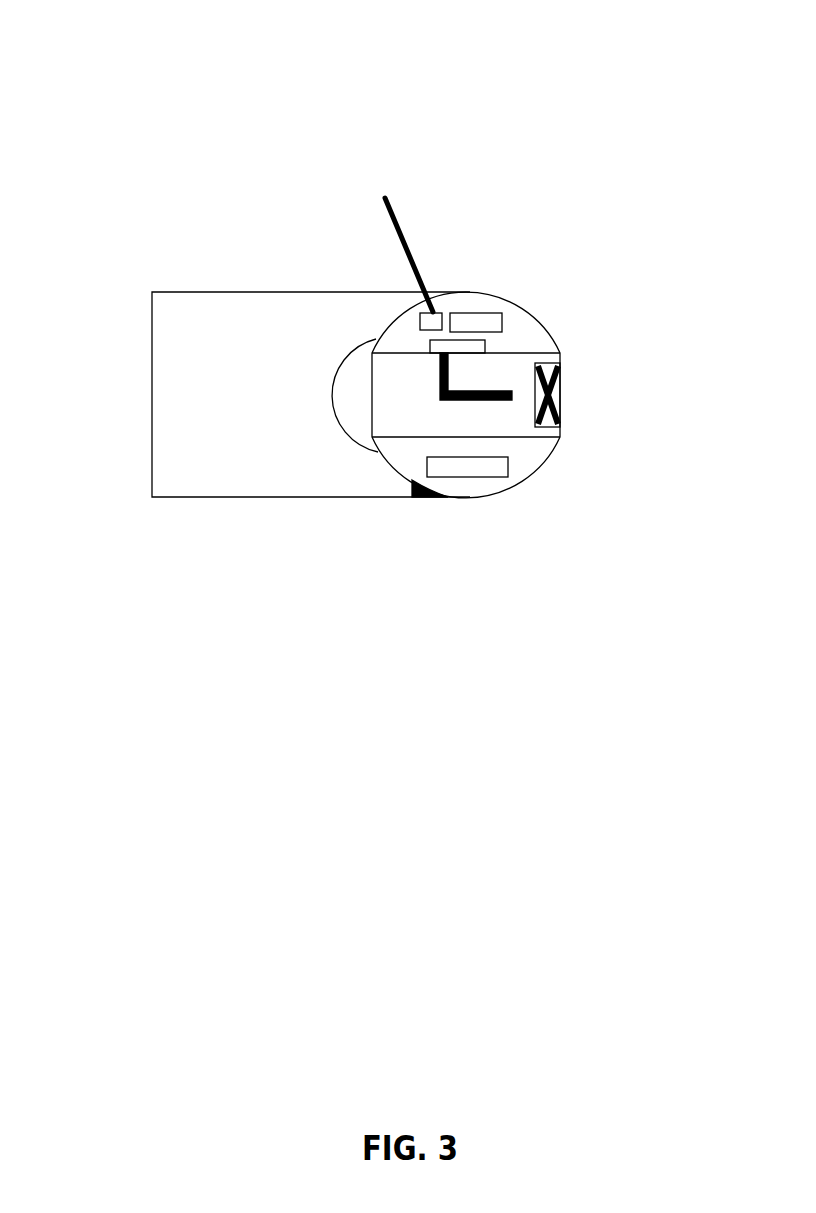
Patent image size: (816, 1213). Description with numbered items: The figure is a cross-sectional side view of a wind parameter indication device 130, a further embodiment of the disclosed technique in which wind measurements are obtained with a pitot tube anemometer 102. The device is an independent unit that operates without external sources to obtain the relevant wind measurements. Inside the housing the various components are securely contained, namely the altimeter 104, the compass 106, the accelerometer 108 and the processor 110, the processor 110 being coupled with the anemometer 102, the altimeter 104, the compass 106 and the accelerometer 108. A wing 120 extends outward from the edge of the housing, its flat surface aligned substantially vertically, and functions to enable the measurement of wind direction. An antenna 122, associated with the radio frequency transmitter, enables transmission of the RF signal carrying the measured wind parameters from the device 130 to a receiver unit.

The anemometer 102 is at (468, 400).
The altimeter 104 is at (503, 313).
The compass 106 is at (500, 479).
The accelerometer 108 is at (418, 313).
The processor 110 is at (487, 350).
The wing 120 is at (262, 497).
The antenna 122 is at (409, 243).
The wind parameter indication device 130 is at (138, 63).